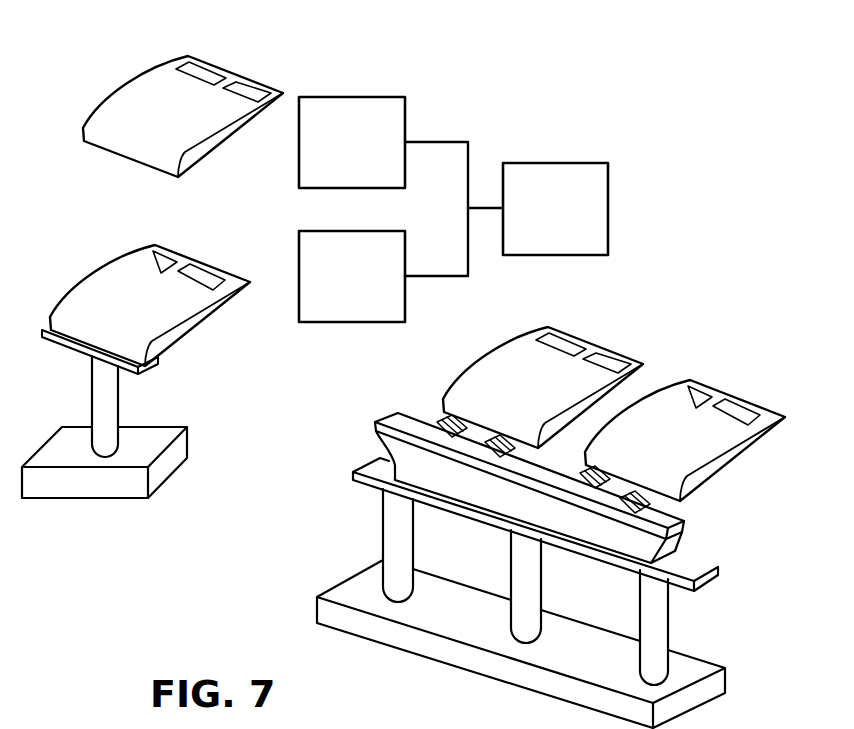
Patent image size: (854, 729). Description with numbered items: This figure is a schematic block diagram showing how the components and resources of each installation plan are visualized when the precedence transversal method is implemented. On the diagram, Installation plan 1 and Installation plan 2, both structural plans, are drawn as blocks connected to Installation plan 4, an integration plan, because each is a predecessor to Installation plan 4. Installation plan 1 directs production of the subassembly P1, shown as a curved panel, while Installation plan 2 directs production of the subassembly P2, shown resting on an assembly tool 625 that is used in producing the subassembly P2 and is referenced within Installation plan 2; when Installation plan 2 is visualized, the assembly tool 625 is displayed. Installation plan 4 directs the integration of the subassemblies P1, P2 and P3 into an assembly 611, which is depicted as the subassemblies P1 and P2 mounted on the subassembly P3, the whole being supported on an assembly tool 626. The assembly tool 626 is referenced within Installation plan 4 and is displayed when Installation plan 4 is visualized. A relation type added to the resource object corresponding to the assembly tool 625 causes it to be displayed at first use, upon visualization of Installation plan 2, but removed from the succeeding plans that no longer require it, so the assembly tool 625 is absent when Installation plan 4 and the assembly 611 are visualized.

The Installation plan 1 is at (352, 97).
The Installation plan 2 is at (352, 231).
The Installation plan 4 is at (555, 163).
The subassembly P1 is at (128, 89).
The subassembly P2 is at (93, 273).
The subassembly P3 is at (373, 437).
The assembly 611 is at (707, 387).
The assembly tool 625 is at (157, 467).
The assembly tool 626 is at (715, 685).